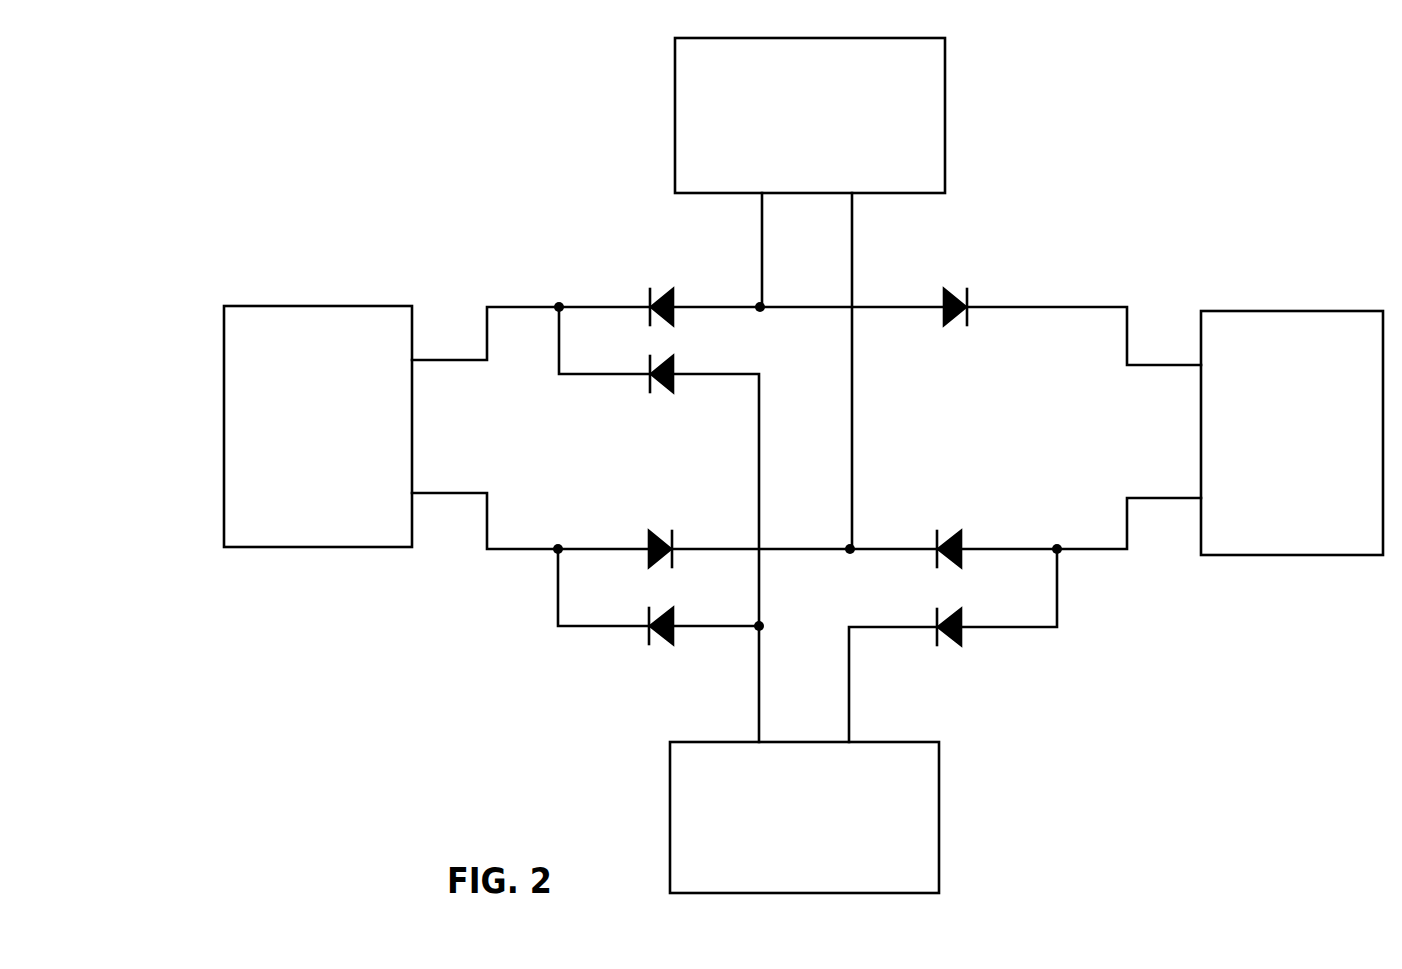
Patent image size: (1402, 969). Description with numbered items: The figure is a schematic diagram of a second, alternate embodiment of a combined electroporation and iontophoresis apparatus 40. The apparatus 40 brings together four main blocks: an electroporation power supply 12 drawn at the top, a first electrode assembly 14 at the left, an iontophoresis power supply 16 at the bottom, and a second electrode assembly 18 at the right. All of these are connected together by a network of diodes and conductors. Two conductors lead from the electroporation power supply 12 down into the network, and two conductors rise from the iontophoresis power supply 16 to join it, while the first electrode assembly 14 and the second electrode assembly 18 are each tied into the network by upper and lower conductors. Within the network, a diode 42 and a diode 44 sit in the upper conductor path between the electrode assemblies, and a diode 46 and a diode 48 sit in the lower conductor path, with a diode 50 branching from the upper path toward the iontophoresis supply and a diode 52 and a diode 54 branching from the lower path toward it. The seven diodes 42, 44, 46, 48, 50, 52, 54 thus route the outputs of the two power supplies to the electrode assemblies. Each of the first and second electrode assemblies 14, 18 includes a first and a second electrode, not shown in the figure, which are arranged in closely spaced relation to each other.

The electroporation power supply 12 is at (945, 136).
The first electrode assembly 14 is at (295, 306).
The iontophoresis power supply 16 is at (939, 818).
The second electrode assembly 18 is at (1311, 311).
The combined electroporation and iontophoresis apparatus 40 is at (1153, 122).
The diode 42 is at (661, 290).
The diode 44 is at (958, 290).
The diode 46 is at (660, 530).
The diode 48 is at (948, 532).
The diode 50 is at (660, 392).
The diode 52 is at (660, 645).
The diode 54 is at (948, 645).